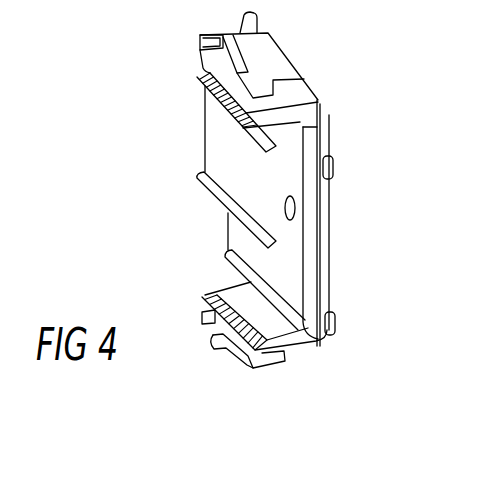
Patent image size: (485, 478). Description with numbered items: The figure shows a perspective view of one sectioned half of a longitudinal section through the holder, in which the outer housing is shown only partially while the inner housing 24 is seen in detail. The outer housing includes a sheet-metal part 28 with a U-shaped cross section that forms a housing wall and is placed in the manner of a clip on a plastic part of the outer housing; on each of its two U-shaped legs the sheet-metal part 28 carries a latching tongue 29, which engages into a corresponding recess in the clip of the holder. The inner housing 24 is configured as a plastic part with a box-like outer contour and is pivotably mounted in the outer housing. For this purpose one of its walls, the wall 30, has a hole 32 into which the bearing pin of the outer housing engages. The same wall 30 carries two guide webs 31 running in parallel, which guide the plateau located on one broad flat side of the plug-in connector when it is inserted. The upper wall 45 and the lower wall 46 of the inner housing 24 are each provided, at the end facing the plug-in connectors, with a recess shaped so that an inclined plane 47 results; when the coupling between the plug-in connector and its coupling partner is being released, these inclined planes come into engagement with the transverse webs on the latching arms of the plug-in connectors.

The inner housing 24 is at (205, 143).
The sheet-metal part 28 is at (280, 65).
The latching tongue 29 is at (262, 37).
The wall 30 is at (292, 254).
The guide webs 31 is at (202, 90).
The hole 32 is at (295, 209).
The upper wall 45 is at (300, 122).
The lower wall 46 is at (262, 317).
The inclined plane 47 is at (202, 296).